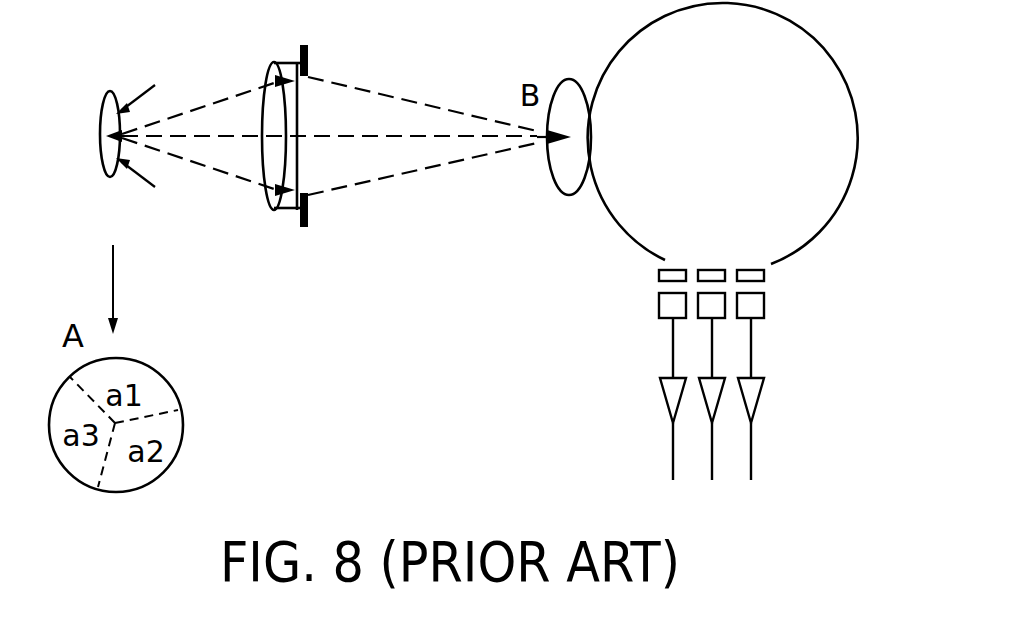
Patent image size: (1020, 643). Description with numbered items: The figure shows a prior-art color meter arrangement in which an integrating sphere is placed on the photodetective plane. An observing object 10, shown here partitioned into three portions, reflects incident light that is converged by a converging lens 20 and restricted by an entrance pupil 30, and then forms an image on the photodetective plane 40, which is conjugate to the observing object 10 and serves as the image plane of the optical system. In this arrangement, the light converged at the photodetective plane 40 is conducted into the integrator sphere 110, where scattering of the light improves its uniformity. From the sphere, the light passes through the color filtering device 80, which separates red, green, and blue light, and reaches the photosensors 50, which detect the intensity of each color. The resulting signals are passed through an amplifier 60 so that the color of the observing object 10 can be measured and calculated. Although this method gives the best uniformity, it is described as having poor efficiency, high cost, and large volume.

The observing object 10 is at (107, 171).
The converging lens 20 is at (268, 190).
The entrance pupil 30 is at (313, 222).
The photodetective plane 40 is at (557, 155).
The integrator sphere 110 is at (637, 72).
The color filtering device 80 is at (677, 281).
The photosensors 50 is at (736, 318).
The amplifier 60 is at (677, 403).